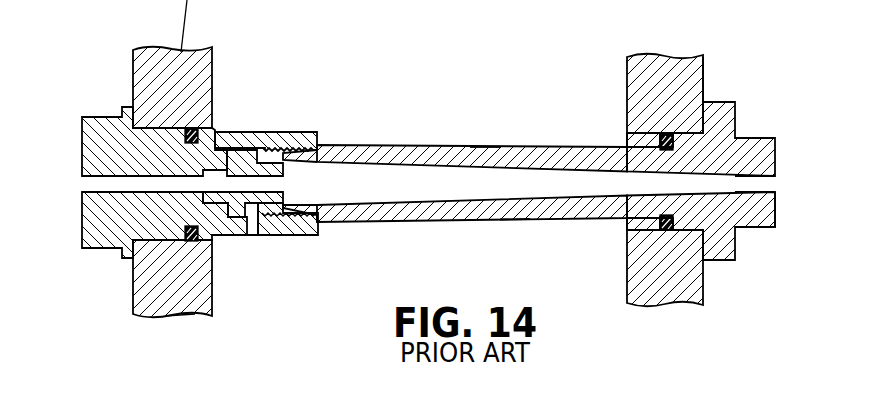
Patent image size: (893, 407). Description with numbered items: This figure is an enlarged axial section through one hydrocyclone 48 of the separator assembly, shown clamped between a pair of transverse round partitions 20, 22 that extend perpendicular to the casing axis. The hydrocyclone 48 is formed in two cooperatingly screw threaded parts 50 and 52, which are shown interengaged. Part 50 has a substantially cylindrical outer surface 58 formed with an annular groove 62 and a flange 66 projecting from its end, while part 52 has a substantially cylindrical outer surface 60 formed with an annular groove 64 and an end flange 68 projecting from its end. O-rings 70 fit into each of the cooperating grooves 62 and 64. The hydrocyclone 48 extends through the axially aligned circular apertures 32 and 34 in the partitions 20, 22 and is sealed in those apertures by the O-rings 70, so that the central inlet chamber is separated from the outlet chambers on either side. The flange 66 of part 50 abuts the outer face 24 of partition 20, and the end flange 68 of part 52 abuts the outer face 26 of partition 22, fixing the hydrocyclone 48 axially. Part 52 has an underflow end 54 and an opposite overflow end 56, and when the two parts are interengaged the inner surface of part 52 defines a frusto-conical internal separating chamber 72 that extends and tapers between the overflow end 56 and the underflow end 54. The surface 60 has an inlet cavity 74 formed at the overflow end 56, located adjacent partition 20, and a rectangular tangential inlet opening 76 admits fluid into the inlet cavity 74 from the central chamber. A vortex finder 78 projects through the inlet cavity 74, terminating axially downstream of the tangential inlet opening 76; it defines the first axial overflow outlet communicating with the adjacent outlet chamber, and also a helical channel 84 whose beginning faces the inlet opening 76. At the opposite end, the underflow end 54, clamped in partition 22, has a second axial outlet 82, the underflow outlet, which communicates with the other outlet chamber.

The transverse round partition 20 is at (178, 316).
The transverse round partition 22 is at (670, 67).
The outer face 24 is at (132, 287).
The outer face 26 is at (703, 58).
The circular aperture 32 is at (198, 240).
The circular aperture 34 is at (628, 248).
The hydrocyclone 48 is at (421, 146).
The screw threaded part 50 is at (90, 145).
The screw threaded part 52 is at (512, 220).
The underflow end 54 is at (777, 227).
The overflow end 56 is at (330, 147).
The cylindrical outer surface 58 is at (97, 117).
The cylindrical outer surface 60 is at (483, 147).
The annular groove 62 is at (232, 130).
The annular groove 64 is at (626, 140).
The flange 66 is at (128, 107).
The end flange 68 is at (727, 102).
The O-ring 70 is at (193, 132).
The frusto-conical internal separating chamber 72 is at (413, 190).
The inlet cavity 74 is at (355, 147).
The rectangular tangential inlet opening 76 is at (252, 228).
The vortex finder 78 is at (305, 222).
The second axial outlet 82 is at (775, 182).
The helical channel 84 is at (295, 230).